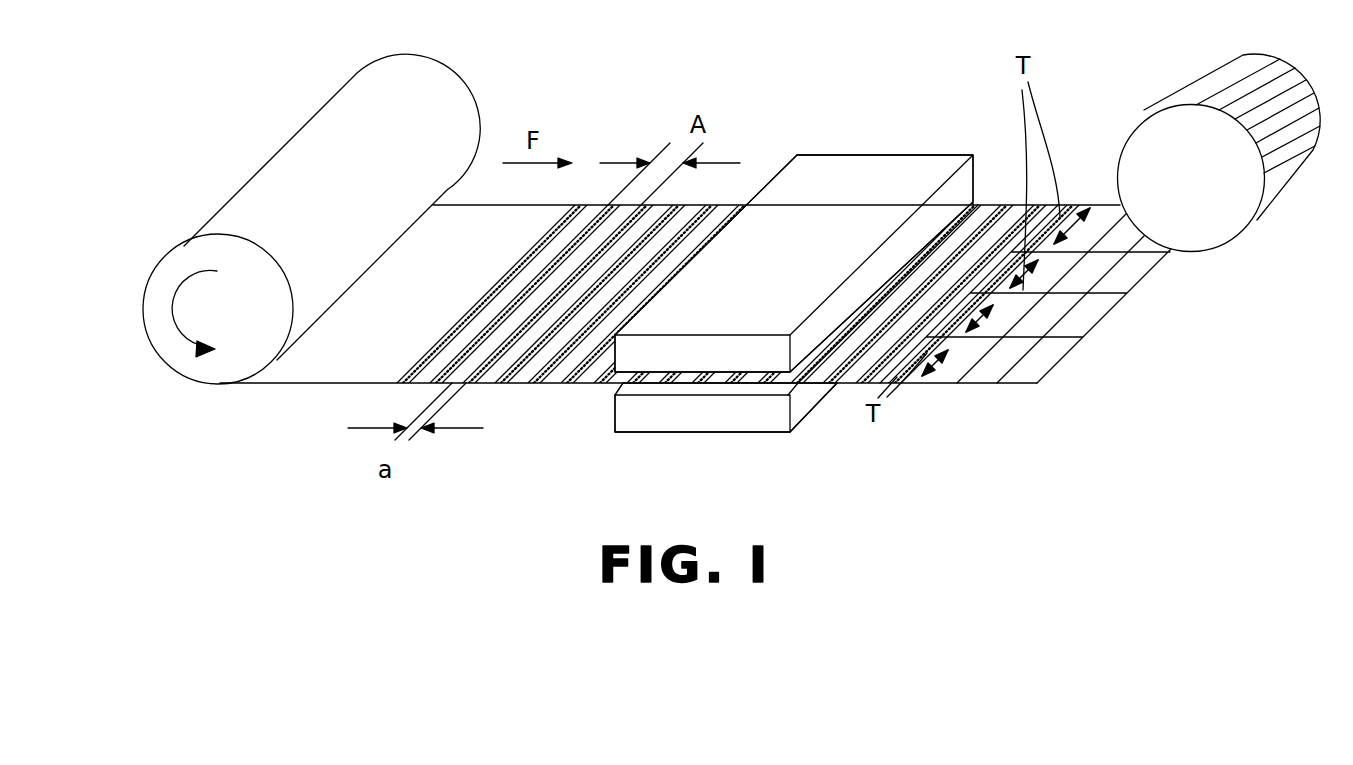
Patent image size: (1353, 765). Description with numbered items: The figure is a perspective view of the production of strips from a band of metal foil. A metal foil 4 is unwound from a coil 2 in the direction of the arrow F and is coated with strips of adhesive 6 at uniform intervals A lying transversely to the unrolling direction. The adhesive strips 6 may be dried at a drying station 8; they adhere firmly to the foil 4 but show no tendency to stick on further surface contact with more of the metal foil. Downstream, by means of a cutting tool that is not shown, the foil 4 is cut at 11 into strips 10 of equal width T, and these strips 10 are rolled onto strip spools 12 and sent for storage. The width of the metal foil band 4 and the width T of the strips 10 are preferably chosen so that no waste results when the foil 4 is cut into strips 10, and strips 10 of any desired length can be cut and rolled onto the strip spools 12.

The coil 2 is at (220, 373).
The metal foil 4 is at (298, 373).
The strips of adhesive 6 is at (550, 367).
The drying station 8 is at (702, 417).
The strips 10 is at (1040, 362).
The cut 11 is at (1085, 312).
The strip spools 12 is at (1197, 235).